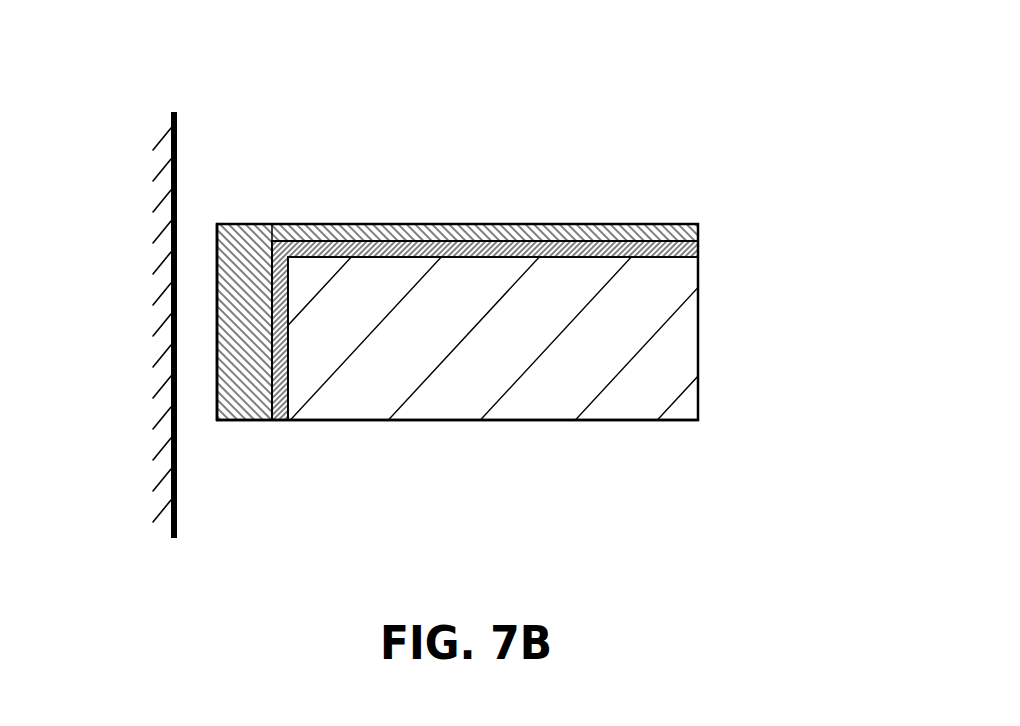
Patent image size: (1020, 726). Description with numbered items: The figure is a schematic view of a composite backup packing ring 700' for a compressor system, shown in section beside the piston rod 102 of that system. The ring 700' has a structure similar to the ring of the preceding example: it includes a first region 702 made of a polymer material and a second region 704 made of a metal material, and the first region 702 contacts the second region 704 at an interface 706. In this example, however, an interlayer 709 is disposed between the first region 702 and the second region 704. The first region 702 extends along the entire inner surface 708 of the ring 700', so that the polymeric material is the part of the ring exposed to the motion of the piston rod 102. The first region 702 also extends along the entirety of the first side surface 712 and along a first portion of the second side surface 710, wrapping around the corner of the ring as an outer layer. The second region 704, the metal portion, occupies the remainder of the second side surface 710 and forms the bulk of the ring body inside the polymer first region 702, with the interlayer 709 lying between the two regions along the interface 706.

The piston rod 102 is at (174, 349).
The composite backup packing ring 700' is at (481, 221).
The first region 702 is at (238, 275).
The second region 704 is at (645, 329).
The interface 706 is at (522, 242).
The inner surface 708 is at (217, 331).
The interlayer 709 is at (668, 253).
The second side surface 710 is at (403, 422).
The first side surface 712 is at (317, 223).